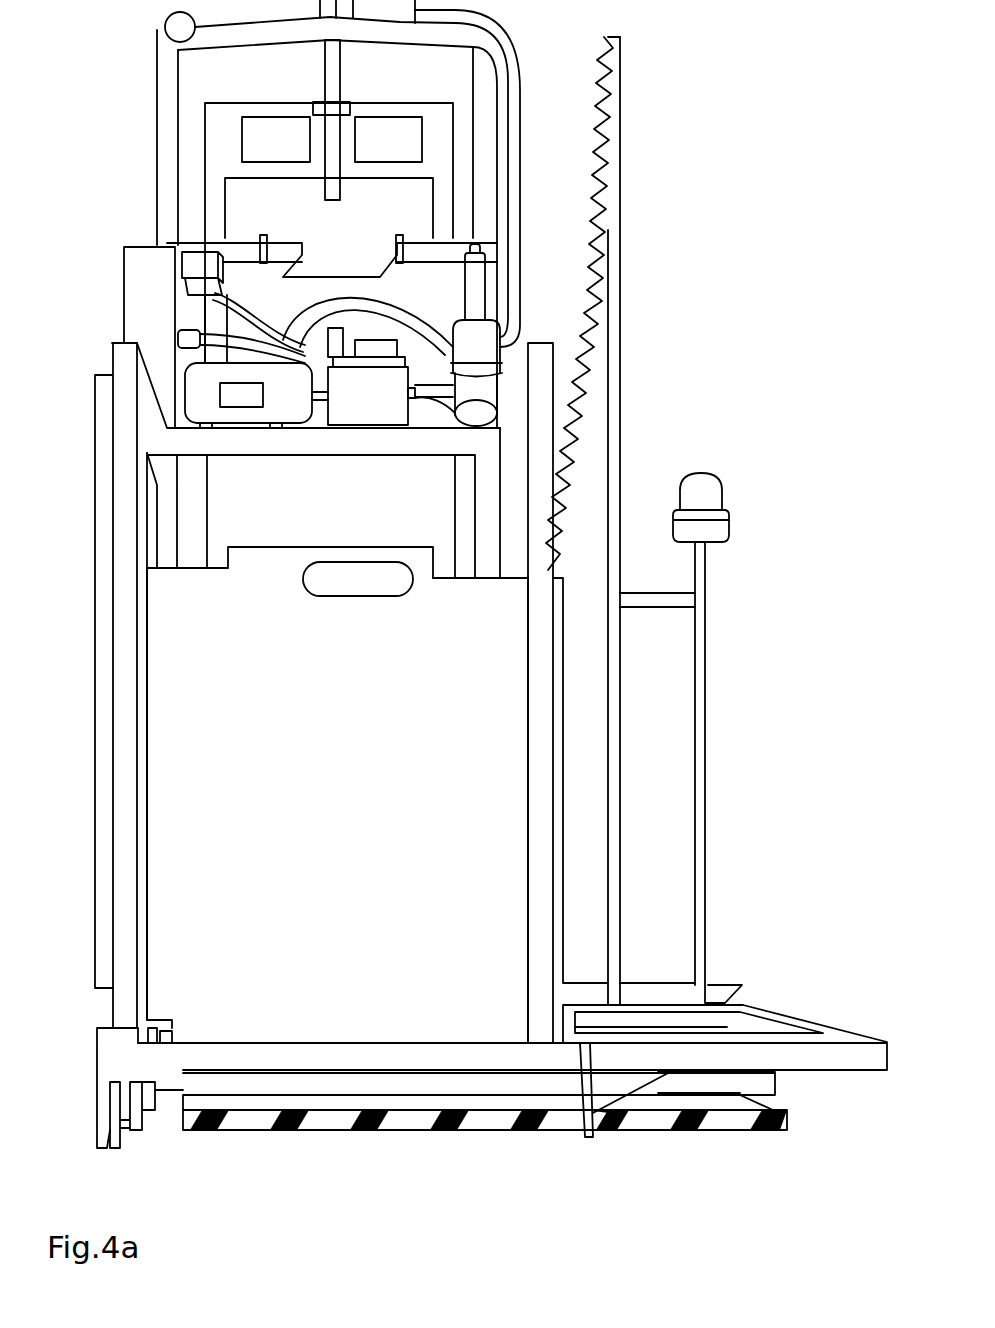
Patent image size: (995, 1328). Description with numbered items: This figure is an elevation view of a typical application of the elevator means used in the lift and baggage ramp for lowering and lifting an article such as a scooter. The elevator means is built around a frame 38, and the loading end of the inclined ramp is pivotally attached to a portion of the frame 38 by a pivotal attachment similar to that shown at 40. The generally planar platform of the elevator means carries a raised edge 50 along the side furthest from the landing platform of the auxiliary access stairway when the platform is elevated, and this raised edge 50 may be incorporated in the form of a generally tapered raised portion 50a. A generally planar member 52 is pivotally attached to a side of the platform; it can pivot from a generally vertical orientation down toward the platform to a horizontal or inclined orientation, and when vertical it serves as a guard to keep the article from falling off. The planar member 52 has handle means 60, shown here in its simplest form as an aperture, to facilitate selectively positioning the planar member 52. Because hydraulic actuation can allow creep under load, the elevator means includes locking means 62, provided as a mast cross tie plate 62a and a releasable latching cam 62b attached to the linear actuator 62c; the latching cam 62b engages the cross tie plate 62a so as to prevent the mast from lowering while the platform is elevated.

The frame 38 is at (547, 443).
The pivotal attachment 40 is at (135, 1133).
The raised edge 50 is at (519, 993).
The generally tapered raised portion 50a is at (767, 1027).
The generally planar member 52 is at (355, 788).
The handle means 60 is at (348, 550).
The locking means 62 is at (150, 188).
The mast cross tie plate 62a is at (402, 212).
The releasable latching cam 62b is at (233, 247).
The linear actuator 62c is at (477, 305).